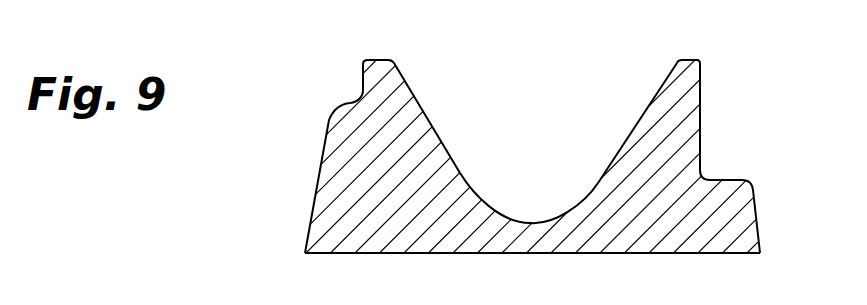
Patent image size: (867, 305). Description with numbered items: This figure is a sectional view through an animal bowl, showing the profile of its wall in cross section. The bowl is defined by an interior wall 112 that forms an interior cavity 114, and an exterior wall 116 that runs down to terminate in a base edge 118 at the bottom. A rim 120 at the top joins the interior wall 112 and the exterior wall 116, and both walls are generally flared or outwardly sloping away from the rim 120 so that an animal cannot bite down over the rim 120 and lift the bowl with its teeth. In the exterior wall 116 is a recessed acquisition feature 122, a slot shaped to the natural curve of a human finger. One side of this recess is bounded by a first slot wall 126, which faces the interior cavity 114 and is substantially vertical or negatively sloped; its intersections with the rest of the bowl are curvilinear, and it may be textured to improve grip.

The interior wall 112 is at (653, 96).
The interior cavity 114 is at (548, 167).
The exterior wall 116 is at (321, 148).
The base edge 118 is at (303, 254).
The rim 120 is at (382, 58).
The recessed acquisition feature 122 is at (723, 62).
The first slot wall 126 is at (701, 117).